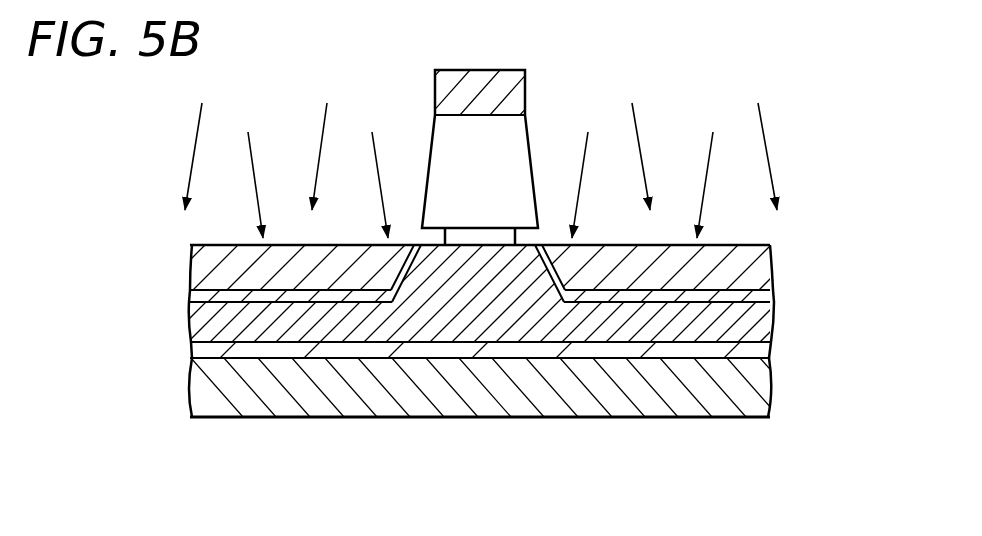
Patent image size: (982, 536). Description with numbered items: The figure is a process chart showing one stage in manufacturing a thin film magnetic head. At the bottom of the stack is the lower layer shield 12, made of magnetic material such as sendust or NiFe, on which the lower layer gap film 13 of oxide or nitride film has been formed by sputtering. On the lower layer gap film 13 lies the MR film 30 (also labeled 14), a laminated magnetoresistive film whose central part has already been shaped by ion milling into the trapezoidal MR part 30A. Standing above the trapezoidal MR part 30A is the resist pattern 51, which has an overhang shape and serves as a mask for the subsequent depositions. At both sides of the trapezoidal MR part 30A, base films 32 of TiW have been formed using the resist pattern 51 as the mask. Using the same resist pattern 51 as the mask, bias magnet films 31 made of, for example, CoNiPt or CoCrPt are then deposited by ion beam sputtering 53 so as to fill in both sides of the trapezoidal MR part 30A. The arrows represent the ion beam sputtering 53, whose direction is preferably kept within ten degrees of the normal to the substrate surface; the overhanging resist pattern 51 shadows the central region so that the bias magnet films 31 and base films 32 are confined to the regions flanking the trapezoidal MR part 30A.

The lower layer shield 12 is at (758, 387).
The lower layer gap film 13 is at (758, 350).
The MR film 14 is at (494, 293).
The MR film 30 is at (760, 317).
The trapezoidal MR part 30A is at (485, 272).
The bias magnet film 31 is at (565, 89).
The base film 32 is at (808, 292).
The resist pattern 51 is at (412, 136).
The ion beam sputtering 53 is at (708, 155).